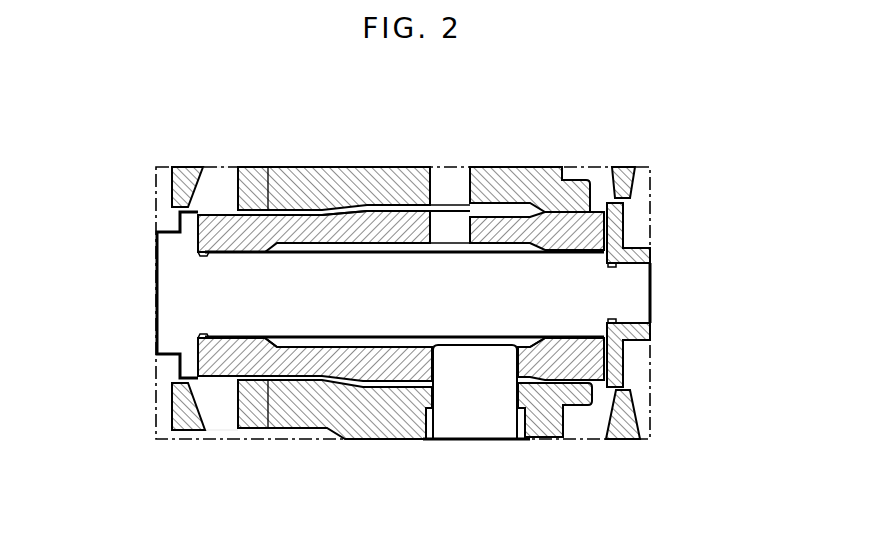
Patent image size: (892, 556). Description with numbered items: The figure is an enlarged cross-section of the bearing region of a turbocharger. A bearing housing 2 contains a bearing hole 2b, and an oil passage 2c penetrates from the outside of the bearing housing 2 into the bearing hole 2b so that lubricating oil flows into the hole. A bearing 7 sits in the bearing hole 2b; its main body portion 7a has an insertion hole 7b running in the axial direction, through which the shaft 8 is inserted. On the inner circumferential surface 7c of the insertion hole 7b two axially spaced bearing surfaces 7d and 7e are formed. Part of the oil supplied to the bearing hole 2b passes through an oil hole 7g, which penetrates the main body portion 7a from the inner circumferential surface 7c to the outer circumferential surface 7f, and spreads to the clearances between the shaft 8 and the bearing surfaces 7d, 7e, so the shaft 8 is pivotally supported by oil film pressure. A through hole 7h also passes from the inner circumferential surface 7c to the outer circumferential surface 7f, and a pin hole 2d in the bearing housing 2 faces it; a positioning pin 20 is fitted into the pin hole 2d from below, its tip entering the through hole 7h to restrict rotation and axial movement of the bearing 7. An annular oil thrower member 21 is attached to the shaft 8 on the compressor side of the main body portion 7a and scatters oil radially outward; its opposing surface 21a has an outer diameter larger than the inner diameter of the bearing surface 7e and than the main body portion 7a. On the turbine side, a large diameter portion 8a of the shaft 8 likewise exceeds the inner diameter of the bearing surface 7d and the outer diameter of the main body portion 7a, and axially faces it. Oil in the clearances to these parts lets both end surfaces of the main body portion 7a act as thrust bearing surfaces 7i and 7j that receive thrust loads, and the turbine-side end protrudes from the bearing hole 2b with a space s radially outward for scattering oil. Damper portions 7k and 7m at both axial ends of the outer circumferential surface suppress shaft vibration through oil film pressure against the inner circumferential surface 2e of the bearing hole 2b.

The bearing housing 2 is at (183, 190).
The bearing hole 2b is at (262, 208).
The oil passage 2c is at (468, 182).
The pin hole 2d is at (432, 397).
The inner circumferential surface 2e is at (266, 212).
The bearing 7 is at (333, 214).
The main body portion 7a is at (338, 209).
The insertion hole 7b is at (407, 243).
The inner circumferential surface 7c is at (375, 243).
The bearing surface 7d is at (228, 340).
The bearing surface 7e is at (560, 338).
The outer circumferential surface 7f is at (376, 378).
The oil hole 7g is at (470, 222).
The through hole 7h is at (395, 440).
The thrust bearing surface 7i is at (195, 362).
The thrust bearing surface 7j is at (627, 360).
The damper portion 7k is at (255, 377).
The damper portion 7m is at (588, 405).
The shaft 8 is at (558, 290).
The large diameter portion 8a is at (170, 178).
The positioning pin 20 is at (480, 415).
The oil thrower member 21 is at (633, 240).
The opposing surface 21a is at (624, 192).
The space s is at (218, 190).